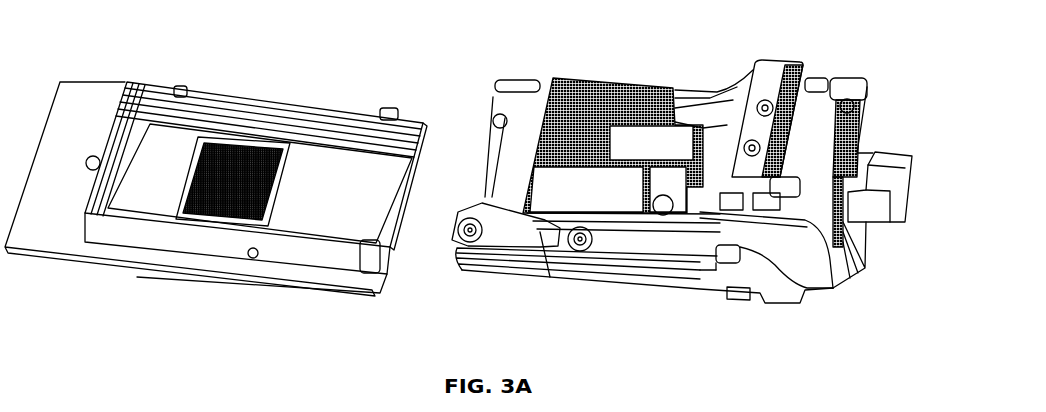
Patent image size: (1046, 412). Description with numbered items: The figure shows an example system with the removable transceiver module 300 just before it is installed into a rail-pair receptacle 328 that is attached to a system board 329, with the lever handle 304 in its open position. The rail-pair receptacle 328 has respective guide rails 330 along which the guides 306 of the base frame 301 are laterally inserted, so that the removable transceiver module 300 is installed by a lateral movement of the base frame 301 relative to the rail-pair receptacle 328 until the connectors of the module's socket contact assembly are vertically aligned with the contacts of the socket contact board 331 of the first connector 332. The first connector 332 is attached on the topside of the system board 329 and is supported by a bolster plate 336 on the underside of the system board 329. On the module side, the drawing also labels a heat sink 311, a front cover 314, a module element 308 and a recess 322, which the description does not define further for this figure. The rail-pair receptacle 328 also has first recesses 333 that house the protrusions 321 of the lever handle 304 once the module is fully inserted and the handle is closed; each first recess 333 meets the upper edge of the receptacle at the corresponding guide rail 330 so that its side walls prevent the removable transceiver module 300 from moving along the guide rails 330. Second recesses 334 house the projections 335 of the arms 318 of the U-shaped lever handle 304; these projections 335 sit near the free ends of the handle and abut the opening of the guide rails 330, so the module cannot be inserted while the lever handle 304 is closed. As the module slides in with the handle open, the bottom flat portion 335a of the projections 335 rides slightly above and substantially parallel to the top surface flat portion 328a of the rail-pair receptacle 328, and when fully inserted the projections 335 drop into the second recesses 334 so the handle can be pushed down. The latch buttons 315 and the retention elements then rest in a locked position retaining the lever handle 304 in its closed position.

The removable transceiver module 300 is at (672, 61).
The base frame 301 is at (790, 288).
The lever handle 304 is at (866, 267).
The guides 306 is at (623, 274).
The connector 308 is at (884, 165).
The camera body 311 is at (623, 87).
The mounting block 314 is at (853, 88).
The latch buttons 315 is at (813, 83).
The arms 318 is at (538, 232).
The protrusions 321 is at (716, 254).
The foot 322 is at (717, 288).
The rail-pair receptacle 328 is at (275, 90).
The top surface flat portion 328a is at (303, 102).
The system board 329 is at (75, 107).
The guide rails 330 is at (330, 113).
The socket contact board 331 is at (218, 147).
The first connector 332 is at (245, 137).
The first recesses 333 is at (385, 117).
The second recesses 334 is at (183, 97).
The projections 335 is at (519, 250).
The bottom flat portion 335a is at (500, 256).
The bolster plate 336 is at (227, 277).